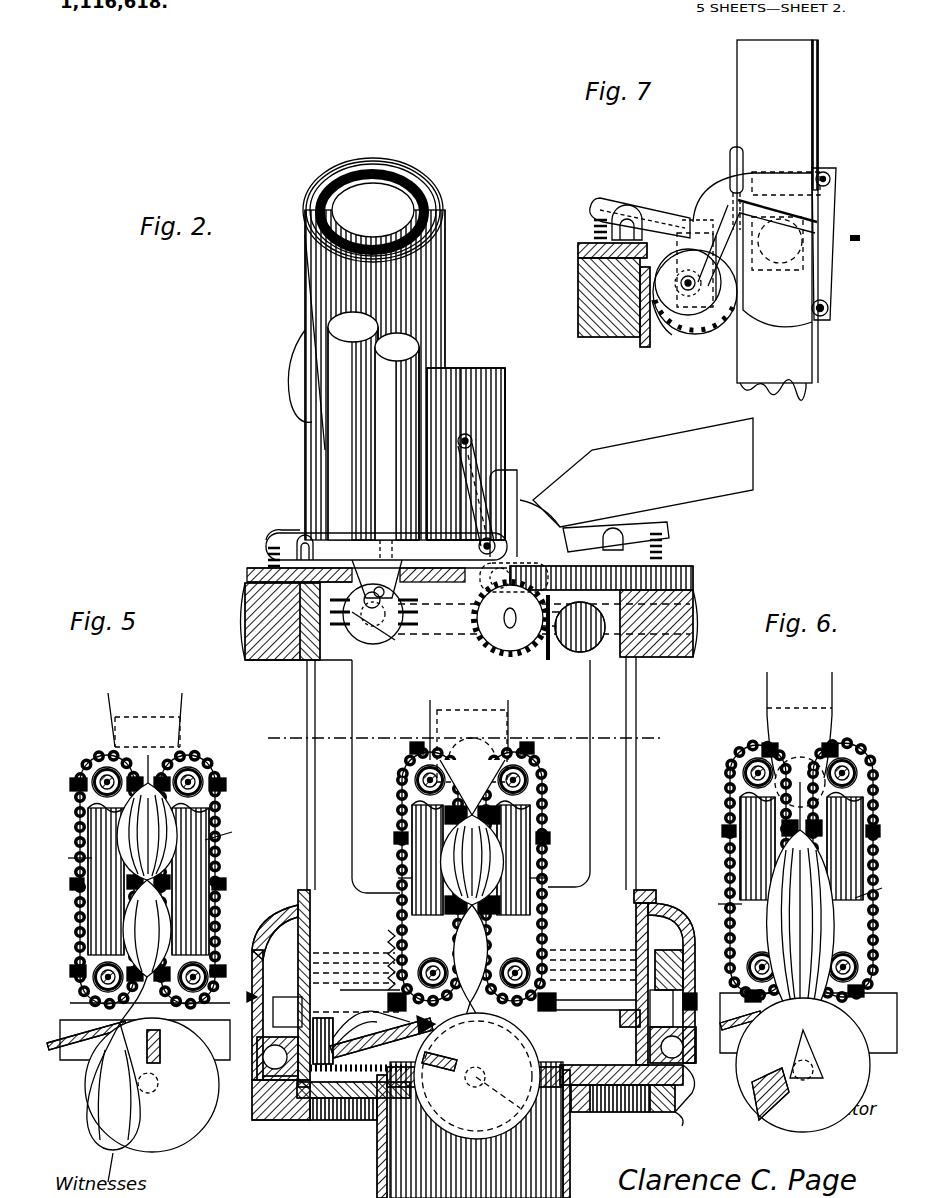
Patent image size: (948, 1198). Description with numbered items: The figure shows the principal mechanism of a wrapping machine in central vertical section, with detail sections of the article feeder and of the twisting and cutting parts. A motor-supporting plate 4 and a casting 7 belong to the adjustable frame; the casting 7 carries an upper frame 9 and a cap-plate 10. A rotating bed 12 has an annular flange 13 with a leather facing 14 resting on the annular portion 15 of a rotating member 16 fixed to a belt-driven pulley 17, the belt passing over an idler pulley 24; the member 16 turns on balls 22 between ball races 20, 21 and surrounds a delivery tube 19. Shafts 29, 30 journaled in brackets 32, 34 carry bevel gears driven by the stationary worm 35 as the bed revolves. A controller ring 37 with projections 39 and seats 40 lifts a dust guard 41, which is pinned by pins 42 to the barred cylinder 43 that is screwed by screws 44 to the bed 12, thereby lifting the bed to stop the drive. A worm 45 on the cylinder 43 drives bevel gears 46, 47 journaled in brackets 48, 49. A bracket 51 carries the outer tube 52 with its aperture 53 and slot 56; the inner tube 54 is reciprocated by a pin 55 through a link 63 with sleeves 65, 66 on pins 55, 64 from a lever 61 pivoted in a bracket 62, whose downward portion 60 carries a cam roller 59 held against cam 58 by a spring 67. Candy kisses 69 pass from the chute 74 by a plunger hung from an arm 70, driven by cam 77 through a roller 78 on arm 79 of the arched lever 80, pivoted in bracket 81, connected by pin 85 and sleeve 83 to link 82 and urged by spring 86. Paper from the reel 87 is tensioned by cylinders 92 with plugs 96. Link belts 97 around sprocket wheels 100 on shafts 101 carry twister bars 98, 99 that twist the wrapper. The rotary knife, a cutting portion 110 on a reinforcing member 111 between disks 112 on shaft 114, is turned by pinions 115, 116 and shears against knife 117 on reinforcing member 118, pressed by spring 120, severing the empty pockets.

In FIG. 2, the plate or casting 4 is at (465, 740).
In FIG. 2, the member or casting 7 is at (252, 1108).
In FIG. 7, the upper frame or casting 9 is at (578, 300).
In FIG. 2, the upper frame or casting 9 is at (245, 612).
In FIG. 7, the cap-plate 10 is at (578, 247).
In FIG. 2, the cap-plate 10 is at (247, 578).
In FIG. 2, the bed 12 is at (476, 1029).
In FIG. 5, the bed 12 is at (74, 1062).
In FIG. 6, the bed 12 is at (811, 1034).
In FIG. 2, the annular lower flange 13 is at (583, 1113).
In FIG. 2, the frictional facing 14 is at (620, 1113).
In FIG. 2, the annular portion 15 is at (606, 1113).
In FIG. 2, the rotating member 16 is at (318, 1122).
In FIG. 2, the annular pulley 17 is at (660, 1113).
In FIG. 2, the directing tube or flange 19 is at (377, 1178).
In FIG. 2, the ball race 20 is at (476, 1035).
In FIG. 2, the ball race 21 is at (684, 1116).
In FIG. 2, the balls 22 is at (282, 1120).
In FIG. 2, the idler pulley 24 is at (474, 994).
In FIG. 2, the shaft 29 is at (518, 952).
In FIG. 5, the shaft 29 is at (193, 958).
In FIG. 6, the shaft 29 is at (843, 948).
In FIG. 2, the shaft 30 is at (436, 952).
In FIG. 5, the shaft 30 is at (110, 958).
In FIG. 6, the shaft 30 is at (762, 948).
In FIG. 2, the bracket 32 is at (548, 868).
In FIG. 5, the bracket 32 is at (230, 834).
In FIG. 6, the bracket 32 is at (879, 888).
In FIG. 2, the bracket 34 is at (410, 1000).
In FIG. 5, the bracket 34 is at (69, 858).
In FIG. 6, the bracket 34 is at (719, 904).
In FIG. 2, the annular worm member 35 is at (654, 902).
In FIG. 2, the manually operable controller 37 is at (695, 955).
In FIG. 2, the projections or knobs 39 is at (690, 1085).
In FIG. 2, the depressed seats 40 is at (252, 1075).
In FIG. 2, the annular shield or guard 41 is at (286, 925).
In FIG. 2, the pins 42 is at (298, 895).
In FIG. 2, the barred cylinder 43 is at (307, 822).
In FIG. 2, the screws 44 is at (475, 1039).
In FIG. 7, the annular worm 45 is at (648, 348).
In FIG. 2, the annular worm 45 is at (695, 588).
In FIG. 2, the bevel gear 46 is at (380, 645).
In FIG. 7, the bevel gear 47 is at (700, 336).
In FIG. 2, the bevel gear 47 is at (522, 652).
In FIG. 2, the bracket 48 is at (360, 625).
In FIG. 2, the bracket 49 is at (563, 645).
In FIG. 7, the bracket 51 is at (730, 156).
In FIG. 2, the bracket 51 is at (524, 505).
In FIG. 7, the cylindrical tube 52 is at (737, 77).
In FIG. 2, the cylindrical tube 52 is at (505, 392).
In FIG. 5, the cylindrical tube 52 is at (146, 716).
In FIG. 6, the cylindrical tube 52 is at (796, 712).
In FIG. 7, the aperture 53 is at (805, 330).
In FIG. 7, the slidable tube 54 is at (812, 390).
In FIG. 2, the slidable tube 54 is at (508, 730).
In FIG. 5, the slidable tube 54 is at (148, 746).
In FIG. 2, the laterally projecting pin 55 is at (472, 440).
In FIG. 7, the vertical slot 56 is at (816, 42).
In FIG. 2, the vertical slot 56 is at (468, 376).
In FIG. 2, the cam 58 is at (368, 642).
In FIG. 2, the cam roller 59 is at (362, 575).
In FIG. 2, the downwardly projecting portion 60 is at (470, 612).
In FIG. 2, the lever 61 is at (270, 538).
In FIG. 2, the bracket 62 is at (304, 540).
In FIG. 2, the link 63 is at (472, 500).
In FIG. 2, the pin 64 is at (479, 548).
In FIG. 2, the cylindrical sleeve or bearing 65 is at (464, 472).
In FIG. 2, the cylindrical sleeve or bearing 66 is at (386, 545).
In FIG. 2, the spring 67 is at (266, 556).
In FIG. 7, the candy kisses 69 is at (784, 228).
In FIG. 2, the candy kisses 69 is at (472, 748).
In FIG. 7, the operating arm 70 is at (830, 177).
In FIG. 7, the chute 74 is at (791, 280).
In FIG. 2, the chute 74 is at (626, 452).
In FIG. 7, the cam 77 is at (683, 340).
In FIG. 2, the cam 77 is at (592, 640).
In FIG. 7, the cam roller 78 is at (665, 336).
In FIG. 7, the downwardly extending arm 79 is at (700, 300).
In FIG. 2, the downwardly extending arm 79 is at (548, 580).
In FIG. 7, the lever 80 is at (664, 216).
In FIG. 2, the lever 80 is at (656, 524).
In FIG. 7, the bracket 81 is at (625, 212).
In FIG. 2, the bracket 81 is at (611, 532).
In FIG. 7, the link 82 is at (836, 200).
In FIG. 7, the cylindrical bearing sleeve 83 is at (828, 311).
In FIG. 7, the pin 85 is at (828, 305).
In FIG. 7, the spring 86 is at (600, 229).
In FIG. 2, the spring 86 is at (664, 548).
In FIG. 2, the flanged reel 87 is at (296, 348).
In FIG. 2, the stationary cylinders 92 is at (375, 392).
In FIG. 2, the flanged plug or closure 96 is at (383, 338).
In FIG. 2, the link belt 97 is at (410, 800).
In FIG. 5, the link belt 97 is at (80, 829).
In FIG. 6, the link belt 97 is at (732, 822).
In FIG. 2, the twister bar 98 is at (394, 838).
In FIG. 5, the twister bar 98 is at (148, 869).
In FIG. 6, the twister bar 98 is at (789, 919).
In FIG. 2, the twister bar 99 is at (416, 742).
In FIG. 5, the twister bar 99 is at (148, 879).
In FIG. 6, the twister bar 99 is at (801, 866).
In FIG. 2, the sprocket wheel 100 is at (410, 806).
In FIG. 5, the sprocket wheel 100 is at (86, 768).
In FIG. 6, the sprocket wheel 100 is at (742, 772).
In FIG. 2, the shaft 101 is at (414, 774).
In FIG. 5, the shaft 101 is at (100, 766).
In FIG. 6, the shaft 101 is at (752, 768).
In FIG. 2, the cutting portion 110 is at (440, 1081).
In FIG. 5, the cutting portion 110 is at (171, 1046).
In FIG. 6, the cutting portion 110 is at (778, 1094).
In FIG. 2, the reinforcing member 111 is at (492, 1069).
In FIG. 5, the reinforcing member 111 is at (160, 1058).
In FIG. 6, the reinforcing member 111 is at (792, 1058).
In FIG. 2, the disks 112 is at (477, 977).
In FIG. 5, the disks 112 is at (180, 1140).
In FIG. 6, the disks 112 is at (866, 1078).
In FIG. 2, the shaft 114 is at (508, 1092).
In FIG. 2, the pinion 115 is at (478, 1142).
In FIG. 2, the pinion 116 is at (384, 950).
In FIG. 2, the knife 117 is at (438, 1050).
In FIG. 5, the knife 117 is at (87, 1038).
In FIG. 6, the knife 117 is at (756, 1032).
In FIG. 2, the reinforcing member 118 is at (348, 1112).
In FIG. 5, the reinforcing member 118 is at (136, 1002).
In FIG. 2, the spring 120 is at (382, 1037).